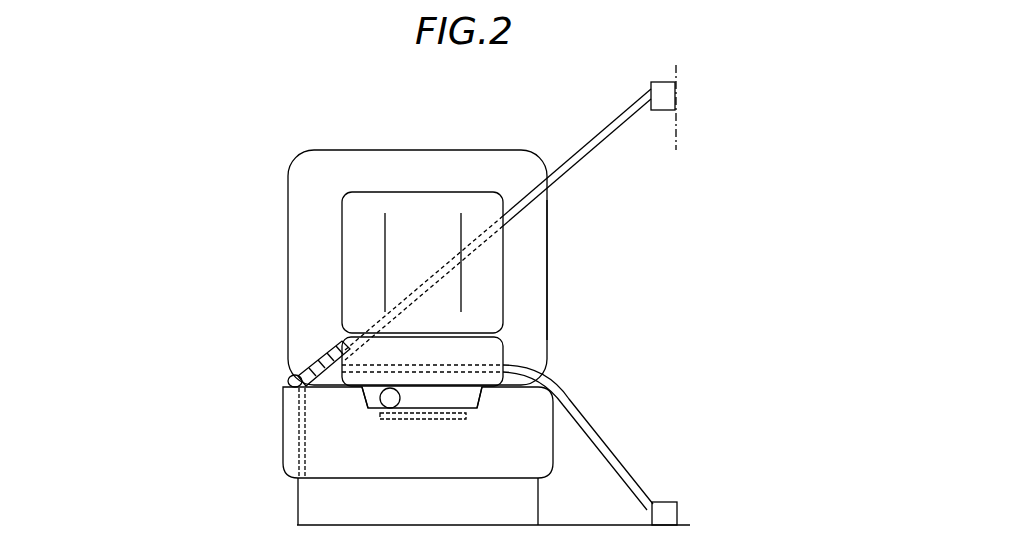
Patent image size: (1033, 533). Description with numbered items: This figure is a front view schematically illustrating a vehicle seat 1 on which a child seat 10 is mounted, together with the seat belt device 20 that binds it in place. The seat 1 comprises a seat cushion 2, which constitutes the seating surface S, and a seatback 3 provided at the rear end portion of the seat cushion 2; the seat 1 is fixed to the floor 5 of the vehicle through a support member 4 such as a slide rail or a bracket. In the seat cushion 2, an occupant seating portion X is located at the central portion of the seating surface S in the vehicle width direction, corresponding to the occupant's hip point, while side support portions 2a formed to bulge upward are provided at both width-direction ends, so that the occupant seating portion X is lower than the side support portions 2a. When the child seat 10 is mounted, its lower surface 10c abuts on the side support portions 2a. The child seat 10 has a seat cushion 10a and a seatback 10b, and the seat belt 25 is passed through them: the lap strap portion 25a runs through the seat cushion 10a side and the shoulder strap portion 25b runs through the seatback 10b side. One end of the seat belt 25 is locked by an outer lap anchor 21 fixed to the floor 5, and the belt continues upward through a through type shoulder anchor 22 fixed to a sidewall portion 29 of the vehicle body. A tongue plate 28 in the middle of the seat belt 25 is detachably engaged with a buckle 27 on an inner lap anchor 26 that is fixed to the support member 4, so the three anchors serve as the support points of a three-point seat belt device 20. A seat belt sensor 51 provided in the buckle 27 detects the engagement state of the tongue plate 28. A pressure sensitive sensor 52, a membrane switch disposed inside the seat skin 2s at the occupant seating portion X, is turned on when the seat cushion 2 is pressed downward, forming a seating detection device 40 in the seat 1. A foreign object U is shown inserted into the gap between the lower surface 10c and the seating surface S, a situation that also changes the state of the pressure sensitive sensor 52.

The seat 1 is at (333, 150).
The seat cushion 2 is at (423, 408).
The side support portions 2a is at (336, 372).
The seat skin 2s is at (410, 409).
The seatback 3 is at (548, 258).
The support member 4 is at (540, 488).
The floor 5 is at (572, 525).
The child seat 10 is at (421, 253).
The seat cushion 10a is at (504, 347).
The seatback 10b is at (342, 249).
The lower surface 10c is at (482, 398).
The seat belt device 20 is at (268, 298).
The outer lap anchor 21 is at (663, 502).
The shoulder anchor 22 is at (651, 84).
The seat belt 25 is at (511, 299).
The lap strap portion 25a is at (600, 437).
The shoulder strap portion 25b is at (592, 138).
The inner lap anchor 26 is at (288, 381).
The buckle 27 is at (324, 392).
The tongue plate 28 is at (318, 364).
The sidewall portion 29 is at (674, 130).
The seating detection device 40 is at (224, 468).
The seat belt sensor 51 is at (338, 433).
The pressure sensitive sensor 52 is at (453, 420).
The seating surface S is at (423, 427).
The foreign object U is at (380, 424).
The occupant seating portion X is at (462, 418).